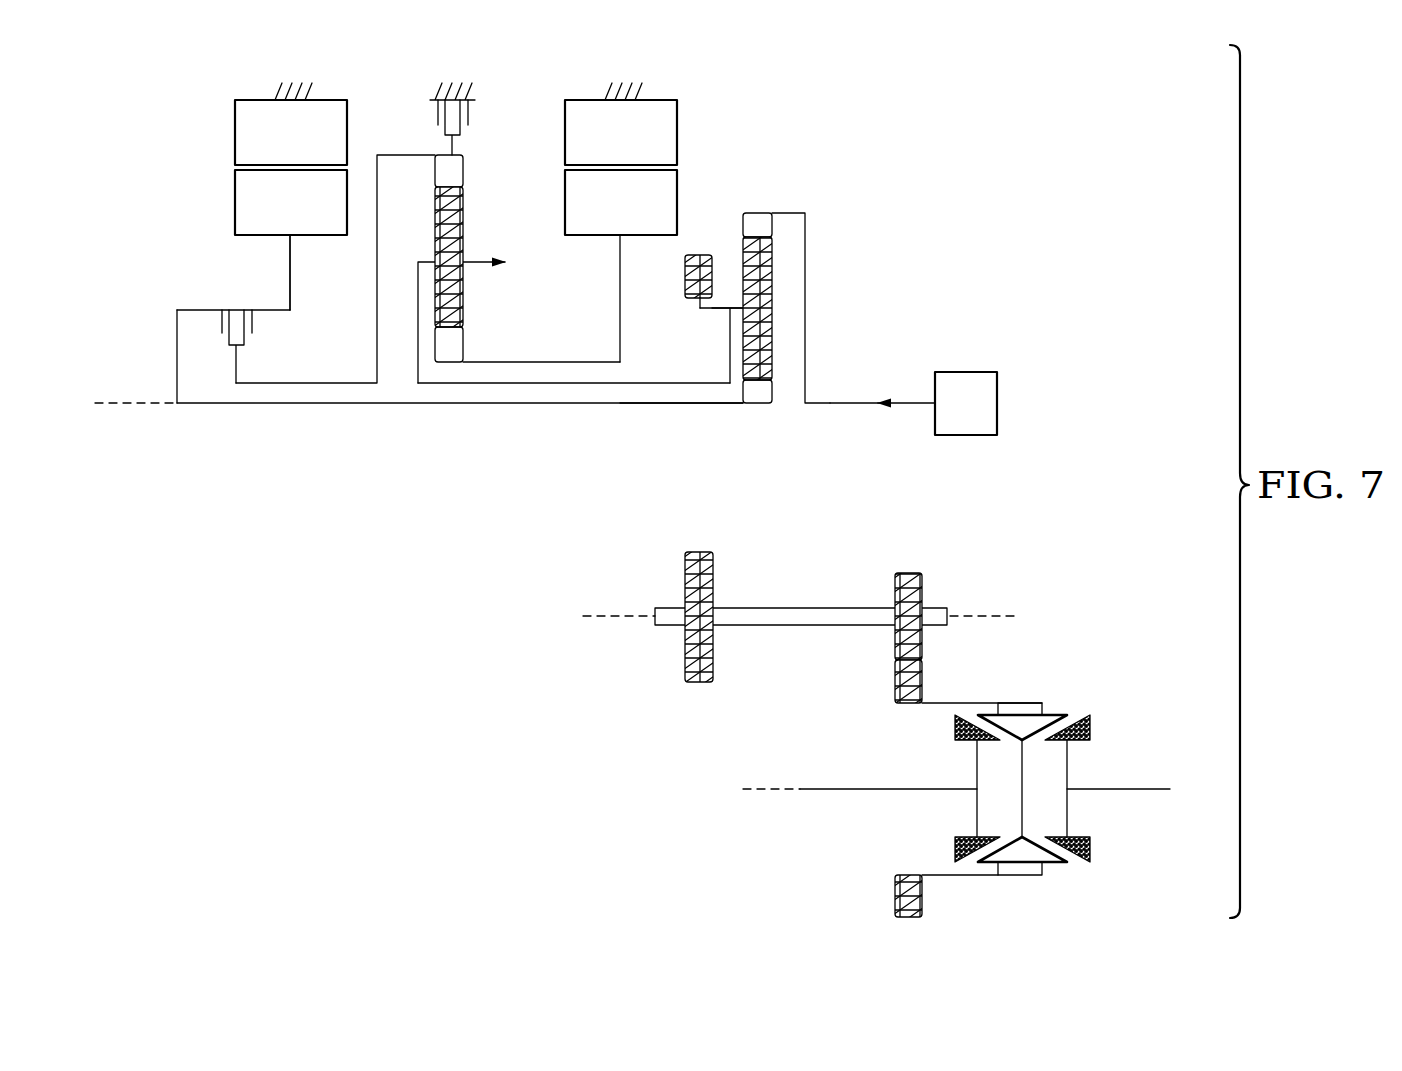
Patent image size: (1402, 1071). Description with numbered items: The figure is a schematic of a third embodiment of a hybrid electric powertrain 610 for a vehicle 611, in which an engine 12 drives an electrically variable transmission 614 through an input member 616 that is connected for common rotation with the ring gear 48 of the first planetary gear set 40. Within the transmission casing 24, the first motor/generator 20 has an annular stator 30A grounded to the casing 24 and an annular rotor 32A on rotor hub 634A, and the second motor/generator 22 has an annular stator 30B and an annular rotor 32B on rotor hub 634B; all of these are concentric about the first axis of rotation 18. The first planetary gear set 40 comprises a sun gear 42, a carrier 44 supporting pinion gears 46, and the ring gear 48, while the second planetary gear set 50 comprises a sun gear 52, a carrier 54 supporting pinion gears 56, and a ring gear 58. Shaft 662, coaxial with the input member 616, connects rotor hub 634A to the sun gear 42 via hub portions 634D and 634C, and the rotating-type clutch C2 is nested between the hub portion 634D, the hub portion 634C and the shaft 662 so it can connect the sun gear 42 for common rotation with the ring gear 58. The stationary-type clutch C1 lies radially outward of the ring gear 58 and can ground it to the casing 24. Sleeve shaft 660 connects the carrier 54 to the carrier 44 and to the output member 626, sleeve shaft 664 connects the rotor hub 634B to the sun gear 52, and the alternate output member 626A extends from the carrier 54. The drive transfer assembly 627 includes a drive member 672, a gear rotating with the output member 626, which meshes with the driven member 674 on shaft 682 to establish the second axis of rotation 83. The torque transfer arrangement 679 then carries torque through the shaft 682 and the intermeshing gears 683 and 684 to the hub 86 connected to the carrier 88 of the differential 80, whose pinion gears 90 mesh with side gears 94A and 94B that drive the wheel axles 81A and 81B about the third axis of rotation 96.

The engine 12 is at (966, 403).
The first axis of rotation 18 is at (118, 405).
The first motor/generator 20 is at (216, 174).
The second motor/generator 22 is at (702, 168).
The transmission casing 24 is at (278, 93).
The annular stator 30A is at (291, 132).
The annular stator 30B is at (621, 132).
The annular rotor 32A is at (291, 240).
The annular rotor 32B is at (621, 202).
The first planetary gear set 40 is at (783, 336).
The sun gear 42 is at (758, 403).
The carrier 44 is at (740, 308).
The pinion gears 46 is at (773, 295).
The ring gear 48 is at (760, 213).
The second planetary gear set 50 is at (407, 307).
The sun gear 52 is at (463, 340).
The carrier 54 is at (430, 262).
The pinion gears 56 is at (463, 232).
The ring gear 58 is at (463, 173).
The stationary-type clutch C1 is at (489, 108).
The rotating-type clutch C2 is at (263, 350).
The powertrain 610 is at (807, 127).
The vehicle 611 is at (936, 111).
The electrically variable transmission 614 is at (719, 108).
The input member 616 is at (830, 403).
The output member 626 is at (707, 310).
The alternate output member 626A is at (475, 262).
The drive transfer assembly 627 is at (1033, 548).
The rotor hub 634A is at (290, 303).
The rotor hub 634B is at (622, 337).
The hub portion 634C is at (177, 357).
The axially-extending hub portion 634D is at (200, 310).
The sleeve shaft 660 is at (480, 383).
The shaft 662 is at (685, 403).
The sleeve shaft 664 is at (535, 362).
The drive member 672 is at (698, 255).
The driven member 674 is at (685, 658).
The torque transfer arrangement 679 is at (1068, 600).
The shaft 682 is at (815, 608).
The gear 683 is at (922, 595).
The gear 684 is at (895, 683).
The differential 80 is at (1104, 680).
The wheel axle 81A is at (855, 789).
The wheel axle 81B is at (1157, 789).
The second axis of rotation 83 is at (617, 617).
The hub 86 is at (950, 703).
The carrier 88 is at (1020, 703).
The pinion gears 90 is at (1052, 862).
The side gear 94A is at (965, 837).
The side gear 94B is at (1092, 850).
The third axis of rotation 96 is at (758, 789).